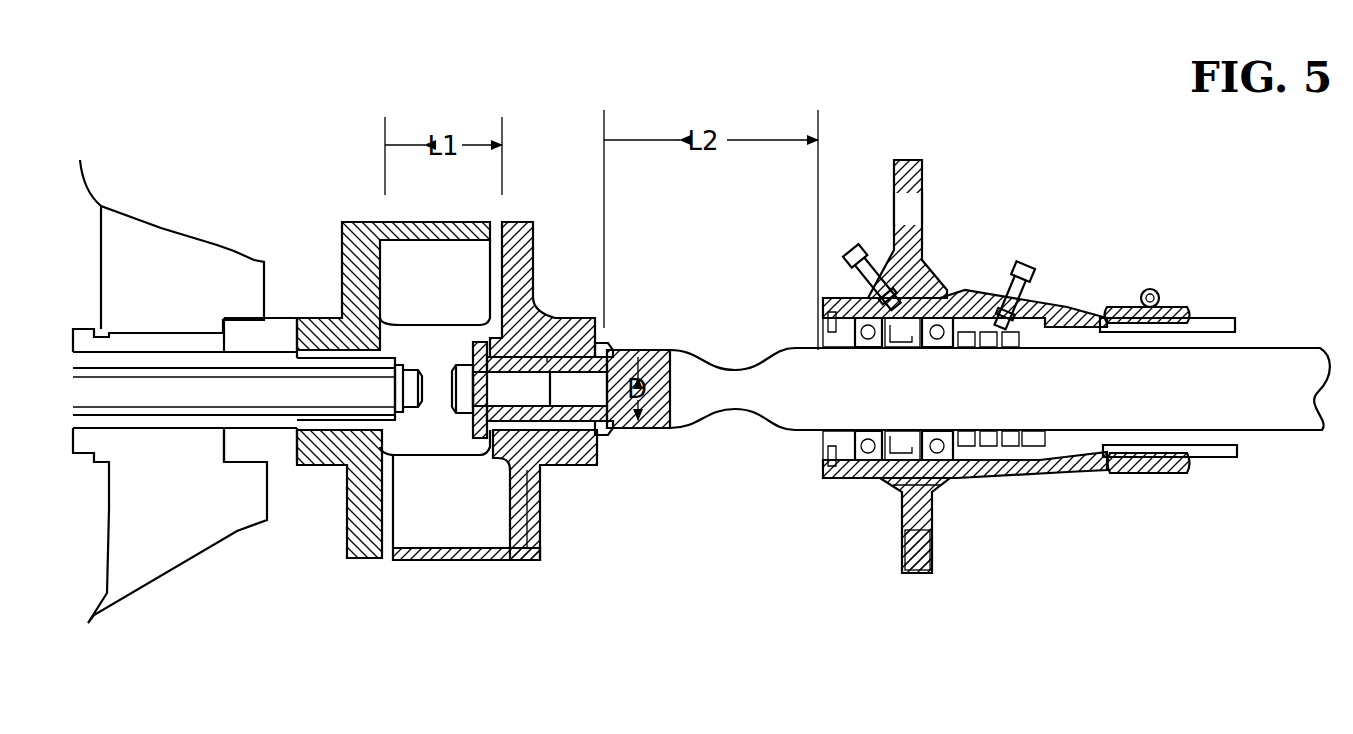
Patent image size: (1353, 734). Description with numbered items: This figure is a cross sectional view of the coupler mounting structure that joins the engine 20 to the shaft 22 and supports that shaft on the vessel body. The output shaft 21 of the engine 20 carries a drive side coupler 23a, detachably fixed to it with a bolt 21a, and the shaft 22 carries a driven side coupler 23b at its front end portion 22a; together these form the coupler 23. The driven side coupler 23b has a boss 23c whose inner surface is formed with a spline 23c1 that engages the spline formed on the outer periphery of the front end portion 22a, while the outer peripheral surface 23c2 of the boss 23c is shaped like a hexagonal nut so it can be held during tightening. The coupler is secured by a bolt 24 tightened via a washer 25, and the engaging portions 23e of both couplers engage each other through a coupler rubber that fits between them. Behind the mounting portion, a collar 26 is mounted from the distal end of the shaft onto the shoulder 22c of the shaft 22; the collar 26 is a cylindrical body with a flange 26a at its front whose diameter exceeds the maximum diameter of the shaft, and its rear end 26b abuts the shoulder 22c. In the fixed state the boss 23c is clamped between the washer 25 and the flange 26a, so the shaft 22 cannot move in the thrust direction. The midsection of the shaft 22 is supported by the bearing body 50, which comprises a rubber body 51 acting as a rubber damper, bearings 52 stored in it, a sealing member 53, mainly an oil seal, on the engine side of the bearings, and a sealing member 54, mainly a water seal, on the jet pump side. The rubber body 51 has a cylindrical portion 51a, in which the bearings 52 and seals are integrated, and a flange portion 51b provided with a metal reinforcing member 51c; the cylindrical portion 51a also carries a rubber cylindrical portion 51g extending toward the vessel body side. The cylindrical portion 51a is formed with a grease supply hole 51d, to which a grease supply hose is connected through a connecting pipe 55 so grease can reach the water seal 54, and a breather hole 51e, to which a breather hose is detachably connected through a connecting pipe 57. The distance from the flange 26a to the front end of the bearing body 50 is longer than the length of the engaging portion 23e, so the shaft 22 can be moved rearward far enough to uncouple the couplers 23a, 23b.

The engine 20 is at (203, 572).
The output shaft 21 is at (264, 337).
The bolt 21a is at (413, 410).
The shaft 22 is at (908, 432).
The front end portion of the shaft 22a is at (578, 462).
The shoulder of the shaft 22c is at (637, 350).
The coupler 23 is at (500, 445).
The drive side coupler 23a is at (348, 545).
The driven side coupler 23b is at (525, 561).
The boss 23c is at (562, 466).
The spline 23c1 is at (547, 357).
The outer peripheral surface of the boss 23c2 is at (587, 466).
The engaging portion 23e is at (492, 558).
The bolt 24 is at (453, 416).
The washer 25 is at (470, 428).
The collar 26 is at (612, 340).
The flange of the collar 26a is at (601, 450).
The rear end of the collar 26b is at (613, 443).
The bearing body 50 is at (985, 337).
The rubber body 51 is at (835, 462).
The cylindrical portion 51a is at (960, 305).
The flange portion 51b is at (908, 490).
The metal reinforcing member 51c is at (908, 160).
The grease supply hole 51d is at (992, 341).
The breather hole 51e is at (892, 335).
The rubber cylindrical portion 51g is at (1120, 471).
The bearings 52 is at (866, 454).
The sealing member (oil seal) 53 is at (823, 434).
The sealing member (water seal) 54 is at (1010, 430).
The connecting pipe 55 is at (1015, 305).
The connecting pipe 57 is at (840, 262).